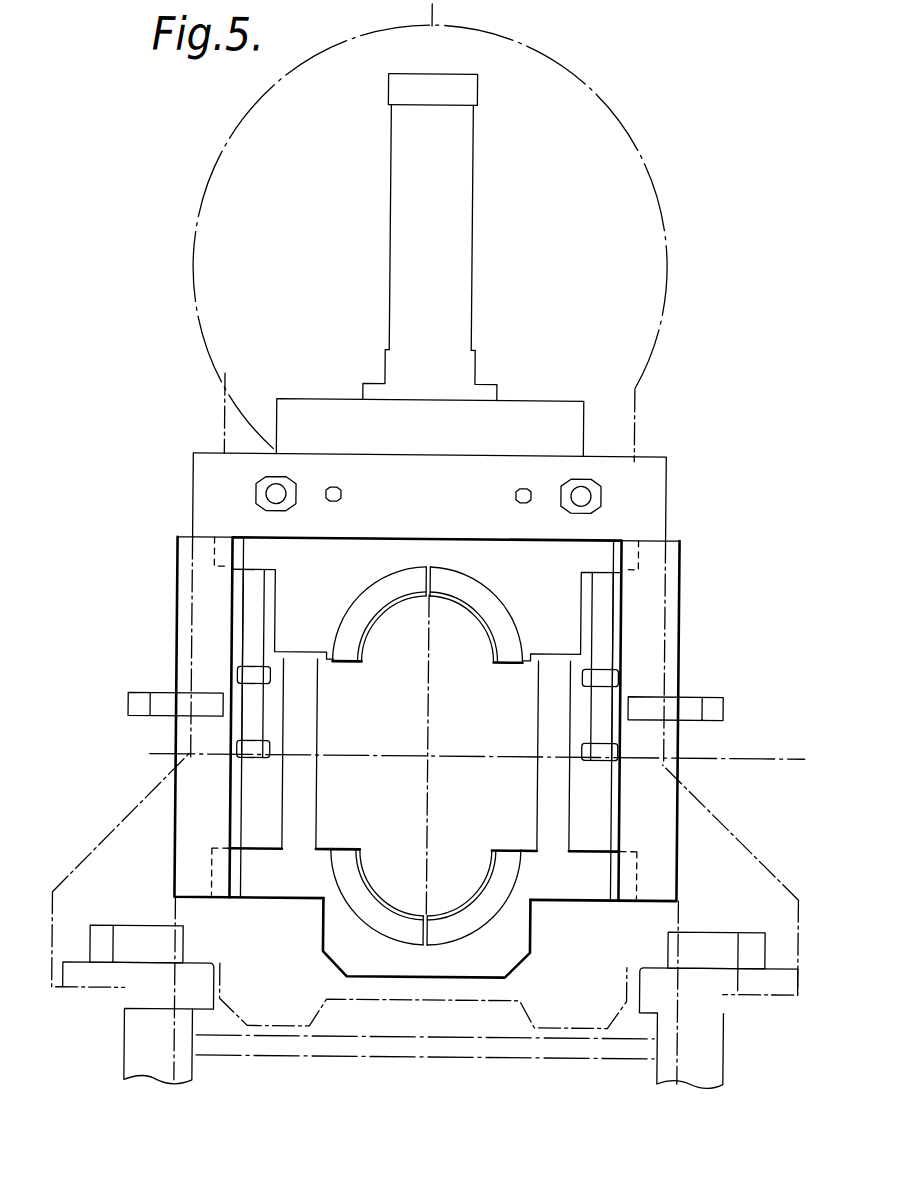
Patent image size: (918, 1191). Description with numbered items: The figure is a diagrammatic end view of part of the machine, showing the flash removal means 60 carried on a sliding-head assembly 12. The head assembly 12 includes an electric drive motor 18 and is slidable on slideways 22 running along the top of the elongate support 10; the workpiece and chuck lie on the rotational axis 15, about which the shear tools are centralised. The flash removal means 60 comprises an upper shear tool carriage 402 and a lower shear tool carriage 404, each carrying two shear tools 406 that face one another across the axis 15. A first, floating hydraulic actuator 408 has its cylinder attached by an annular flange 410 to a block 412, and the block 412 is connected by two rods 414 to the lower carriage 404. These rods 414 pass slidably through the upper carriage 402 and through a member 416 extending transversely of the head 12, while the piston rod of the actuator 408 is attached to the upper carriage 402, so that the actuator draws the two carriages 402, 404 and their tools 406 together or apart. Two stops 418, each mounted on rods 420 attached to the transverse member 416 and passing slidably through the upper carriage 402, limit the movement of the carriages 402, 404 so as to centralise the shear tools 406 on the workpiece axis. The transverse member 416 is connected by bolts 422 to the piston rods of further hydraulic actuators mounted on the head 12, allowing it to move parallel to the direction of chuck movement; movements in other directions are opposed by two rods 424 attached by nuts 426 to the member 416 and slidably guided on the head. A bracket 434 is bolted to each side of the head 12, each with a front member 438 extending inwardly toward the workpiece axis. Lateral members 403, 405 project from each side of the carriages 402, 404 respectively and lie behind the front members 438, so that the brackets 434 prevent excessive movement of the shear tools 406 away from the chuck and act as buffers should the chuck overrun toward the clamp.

The support 10 is at (143, 1058).
The sliding-head assembly 12 is at (209, 435).
The rotational axis 15 is at (436, 752).
The electric drive motor 18 is at (336, 240).
The slideways 22 is at (165, 995).
The flash removal means 60 is at (392, 614).
The upper shear tool carriage 402 is at (359, 591).
The lateral member 403 is at (213, 560).
The lower shear tool carriage 404 is at (522, 977).
The lateral member 405 is at (214, 897).
The shear tools 406 is at (474, 587).
The floating hydraulic actuator 408 is at (458, 239).
The annular flange 410 is at (480, 388).
The block 412 is at (634, 388).
The rods 414 is at (312, 746).
The transverse member 416 is at (608, 466).
The stops 418 is at (237, 675).
The rods 420 is at (247, 608).
The bolts 422 is at (511, 496).
The rods 424 is at (270, 495).
The nuts 426 is at (250, 484).
The bracket 434 is at (172, 841).
The front member 438 is at (193, 803).